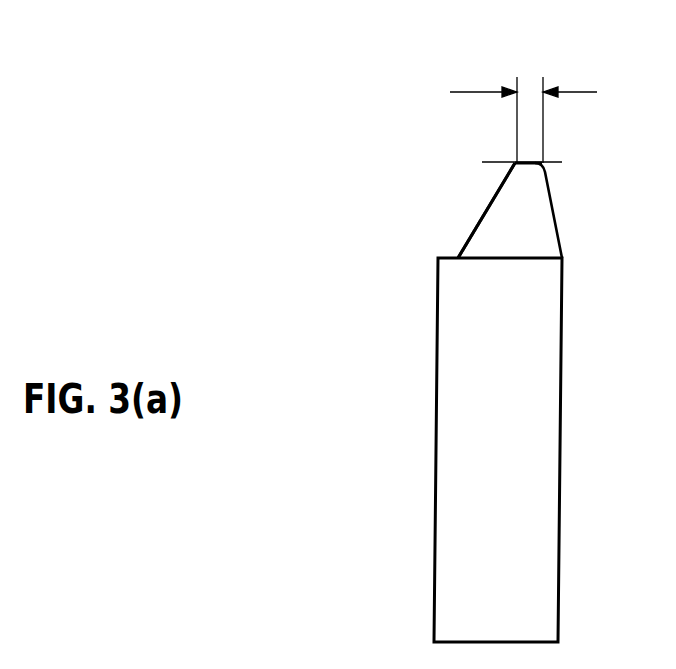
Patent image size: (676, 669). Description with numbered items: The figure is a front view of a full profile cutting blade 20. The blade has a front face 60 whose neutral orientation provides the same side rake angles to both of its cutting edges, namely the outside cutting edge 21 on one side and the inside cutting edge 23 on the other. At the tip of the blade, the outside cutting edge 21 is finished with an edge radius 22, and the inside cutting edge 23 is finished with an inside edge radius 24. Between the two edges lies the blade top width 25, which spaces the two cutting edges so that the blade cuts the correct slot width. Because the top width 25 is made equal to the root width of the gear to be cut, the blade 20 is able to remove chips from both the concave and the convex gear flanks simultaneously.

The full profile blade 20 is at (492, 377).
The outside cutting edge 21 is at (552, 208).
The edge radius 22 is at (542, 163).
The inside cutting edge 23 is at (485, 208).
The inside edge radius 24 is at (513, 163).
The blade top width 25 is at (527, 87).
The front face 60 is at (508, 230).